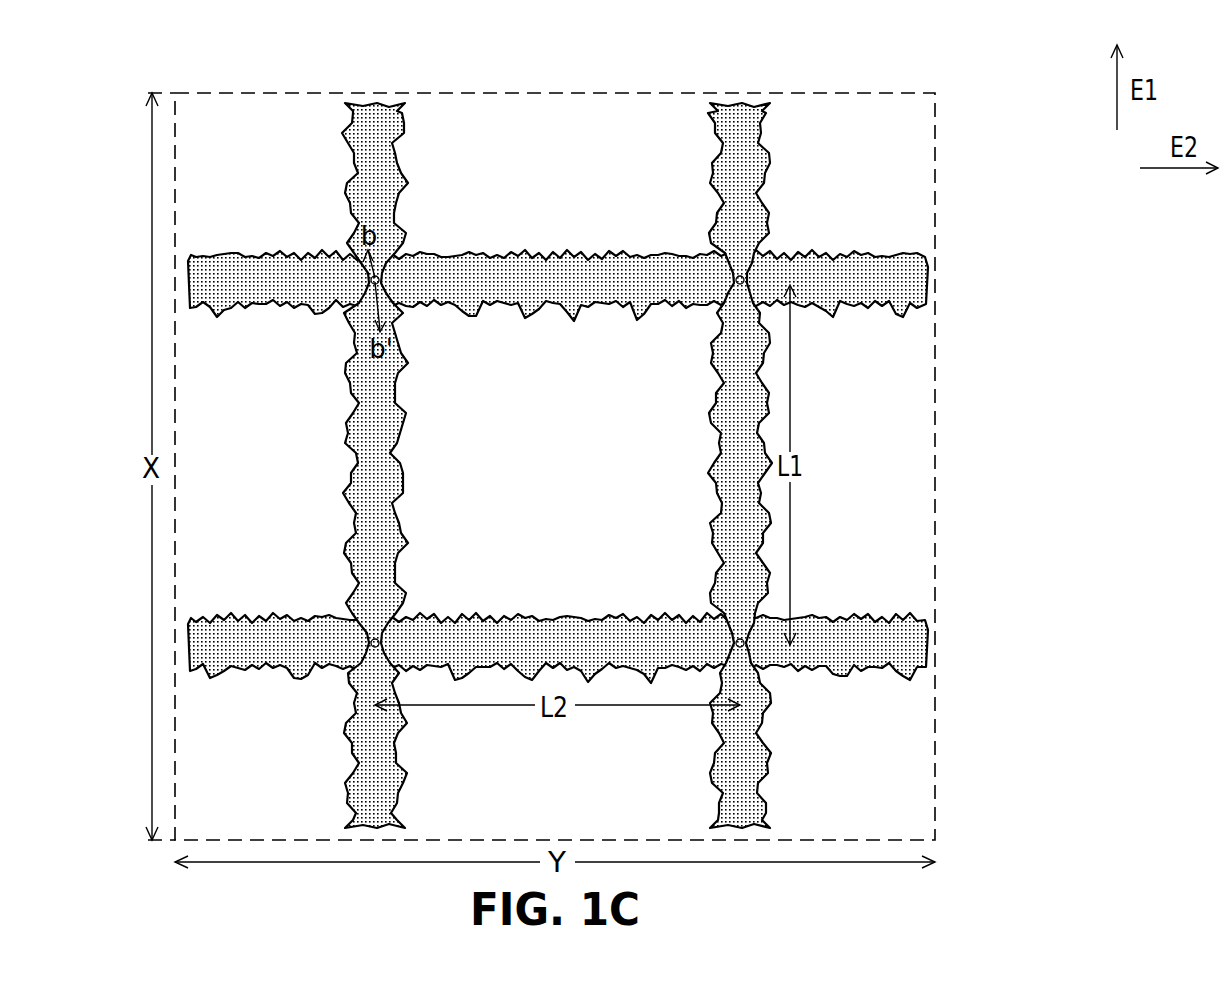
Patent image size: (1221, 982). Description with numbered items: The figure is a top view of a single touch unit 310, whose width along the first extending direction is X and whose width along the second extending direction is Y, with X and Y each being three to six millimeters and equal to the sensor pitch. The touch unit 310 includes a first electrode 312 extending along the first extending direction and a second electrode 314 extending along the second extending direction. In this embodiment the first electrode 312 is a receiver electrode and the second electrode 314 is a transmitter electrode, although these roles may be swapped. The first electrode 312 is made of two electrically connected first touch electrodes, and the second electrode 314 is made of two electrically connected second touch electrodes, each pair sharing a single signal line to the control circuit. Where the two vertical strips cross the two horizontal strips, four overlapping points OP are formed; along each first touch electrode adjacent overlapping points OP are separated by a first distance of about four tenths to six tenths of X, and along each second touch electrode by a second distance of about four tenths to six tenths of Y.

The touch unit 310 is at (1197, 841).
The first electrode 312 is at (557, 416).
The second electrode 314 is at (629, 466).
The overlapping point OP is at (368, 290).